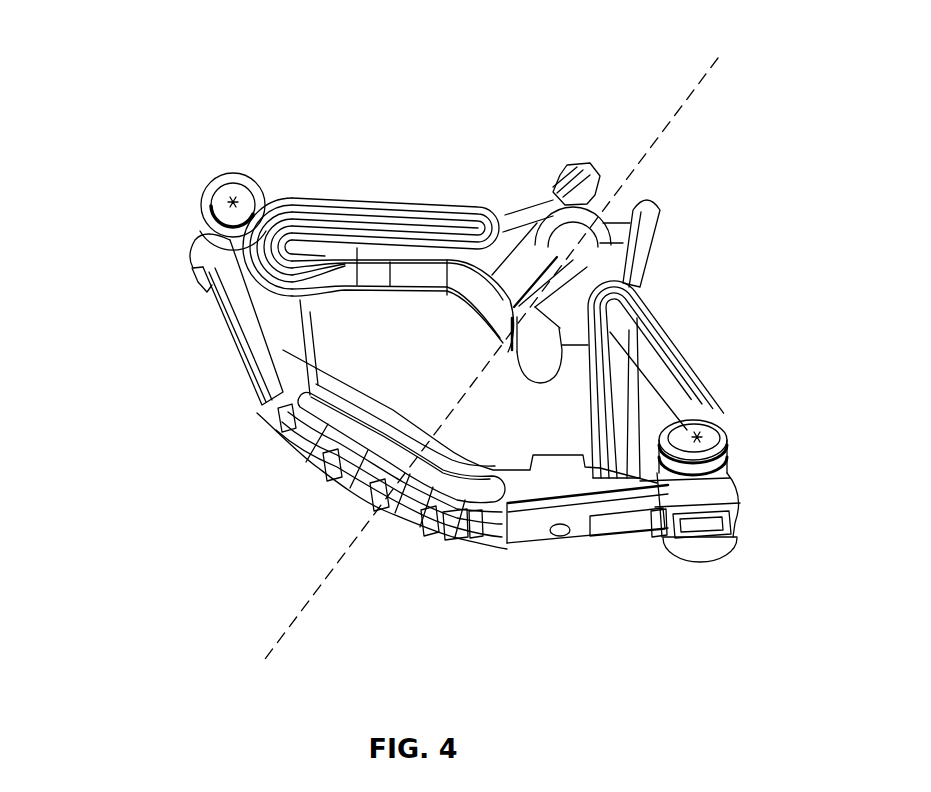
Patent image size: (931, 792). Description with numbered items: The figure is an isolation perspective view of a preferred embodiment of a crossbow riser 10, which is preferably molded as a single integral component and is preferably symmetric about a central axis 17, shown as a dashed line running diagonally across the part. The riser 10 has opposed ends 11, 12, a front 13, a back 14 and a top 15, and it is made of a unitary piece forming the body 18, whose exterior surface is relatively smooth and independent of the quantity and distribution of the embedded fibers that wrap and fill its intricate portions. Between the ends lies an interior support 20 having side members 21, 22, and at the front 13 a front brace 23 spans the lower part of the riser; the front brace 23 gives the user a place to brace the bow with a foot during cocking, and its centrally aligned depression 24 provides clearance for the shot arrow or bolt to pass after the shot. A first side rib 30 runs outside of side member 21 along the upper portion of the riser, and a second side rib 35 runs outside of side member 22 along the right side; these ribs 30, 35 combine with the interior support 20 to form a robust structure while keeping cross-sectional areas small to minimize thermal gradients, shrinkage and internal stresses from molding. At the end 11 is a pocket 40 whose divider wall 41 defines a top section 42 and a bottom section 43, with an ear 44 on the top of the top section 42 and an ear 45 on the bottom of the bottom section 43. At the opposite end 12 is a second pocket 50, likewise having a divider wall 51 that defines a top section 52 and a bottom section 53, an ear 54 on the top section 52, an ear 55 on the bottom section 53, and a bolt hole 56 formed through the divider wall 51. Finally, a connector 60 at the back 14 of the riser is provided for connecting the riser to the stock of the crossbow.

The riser 10 is at (397, 168).
The end 11 is at (210, 195).
The end 12 is at (737, 494).
The front 13 is at (357, 487).
The back 14 is at (600, 188).
The top 15 is at (503, 230).
The central axis 17 is at (700, 83).
The body 18 is at (532, 205).
The interior support 20 is at (318, 300).
The side member 21 is at (423, 277).
The side member 22 is at (560, 397).
The front brace 23 is at (447, 523).
The depression 24 is at (397, 517).
The first side rib 30 is at (280, 210).
The second side rib 35 is at (683, 378).
The pocket 40 is at (202, 252).
The divider wall 41 is at (192, 275).
The top section 42 is at (190, 225).
The bottom section 43 is at (205, 297).
The ear 44 is at (228, 190).
The ear 45 is at (210, 310).
The second pocket 50 is at (543, 513).
The divider wall 51 is at (587, 543).
The top section 52 is at (680, 483).
The bottom section 53 is at (667, 547).
The ear 54 is at (707, 475).
The ear 55 is at (700, 547).
The bolt hole 56 is at (567, 533).
The connector 60 is at (573, 170).